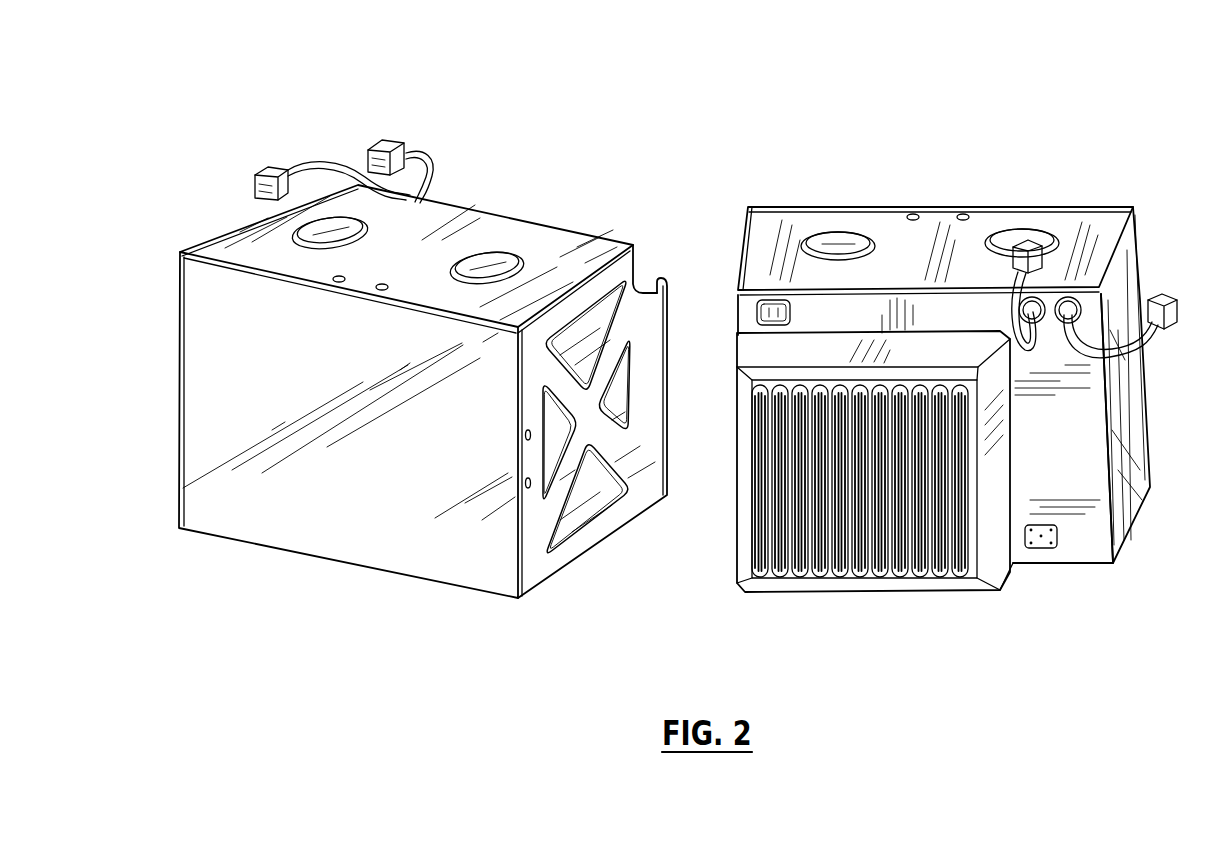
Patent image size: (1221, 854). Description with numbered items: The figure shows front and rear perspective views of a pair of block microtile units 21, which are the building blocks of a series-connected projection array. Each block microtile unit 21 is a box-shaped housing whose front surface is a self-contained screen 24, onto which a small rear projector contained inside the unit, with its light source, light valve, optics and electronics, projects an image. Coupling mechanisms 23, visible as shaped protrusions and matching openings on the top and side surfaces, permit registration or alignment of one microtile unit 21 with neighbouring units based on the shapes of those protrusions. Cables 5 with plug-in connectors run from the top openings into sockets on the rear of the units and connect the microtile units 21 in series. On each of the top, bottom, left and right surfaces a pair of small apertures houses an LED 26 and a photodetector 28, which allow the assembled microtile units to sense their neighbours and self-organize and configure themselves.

The cables 5 is at (325, 160).
The block microtile unit 21 is at (757, 267).
The coupling mechanism 23 is at (507, 252).
The self-contained screen 24 is at (232, 508).
The LED 26 is at (337, 283).
The photodetector 28 is at (381, 292).